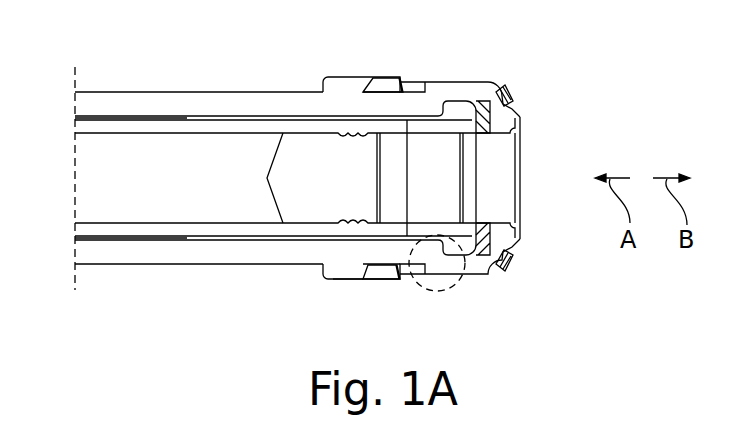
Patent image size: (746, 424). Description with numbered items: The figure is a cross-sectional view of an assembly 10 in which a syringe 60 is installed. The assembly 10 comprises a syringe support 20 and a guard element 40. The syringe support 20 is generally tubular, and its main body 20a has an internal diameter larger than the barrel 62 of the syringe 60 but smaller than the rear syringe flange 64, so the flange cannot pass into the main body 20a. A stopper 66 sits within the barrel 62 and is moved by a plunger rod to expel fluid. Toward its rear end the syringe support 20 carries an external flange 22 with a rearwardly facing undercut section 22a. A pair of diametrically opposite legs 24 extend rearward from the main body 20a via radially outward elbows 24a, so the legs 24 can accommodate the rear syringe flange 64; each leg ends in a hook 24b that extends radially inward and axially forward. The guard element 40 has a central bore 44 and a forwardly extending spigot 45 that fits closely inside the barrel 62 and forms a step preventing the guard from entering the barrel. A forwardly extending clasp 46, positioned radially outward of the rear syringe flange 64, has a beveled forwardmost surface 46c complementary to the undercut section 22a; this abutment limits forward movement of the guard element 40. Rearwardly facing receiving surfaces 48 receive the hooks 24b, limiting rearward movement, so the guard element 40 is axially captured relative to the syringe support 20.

The assembly 10 is at (554, 62).
The syringe support 20 is at (217, 84).
The main body 20a is at (160, 103).
The external flange 22 is at (335, 90).
The rearwardly facing undercut section 22a is at (372, 78).
The rearwardly axially extending legs 24 is at (447, 86).
The elbow 24a is at (433, 291).
The hook 24b is at (510, 93).
The guard element 40 is at (389, 68).
The central bore 44 is at (500, 217).
The spigot 45 is at (483, 100).
The clasp 46 is at (382, 288).
The forwardmost surface of the clasp 46c is at (358, 279).
The axially rearwardly facing receiving surfaces 48 is at (505, 88).
The syringe 60 is at (257, 254).
The barrel 62 is at (118, 128).
The rear syringe flange 64 is at (481, 262).
The stopper 66 is at (276, 183).